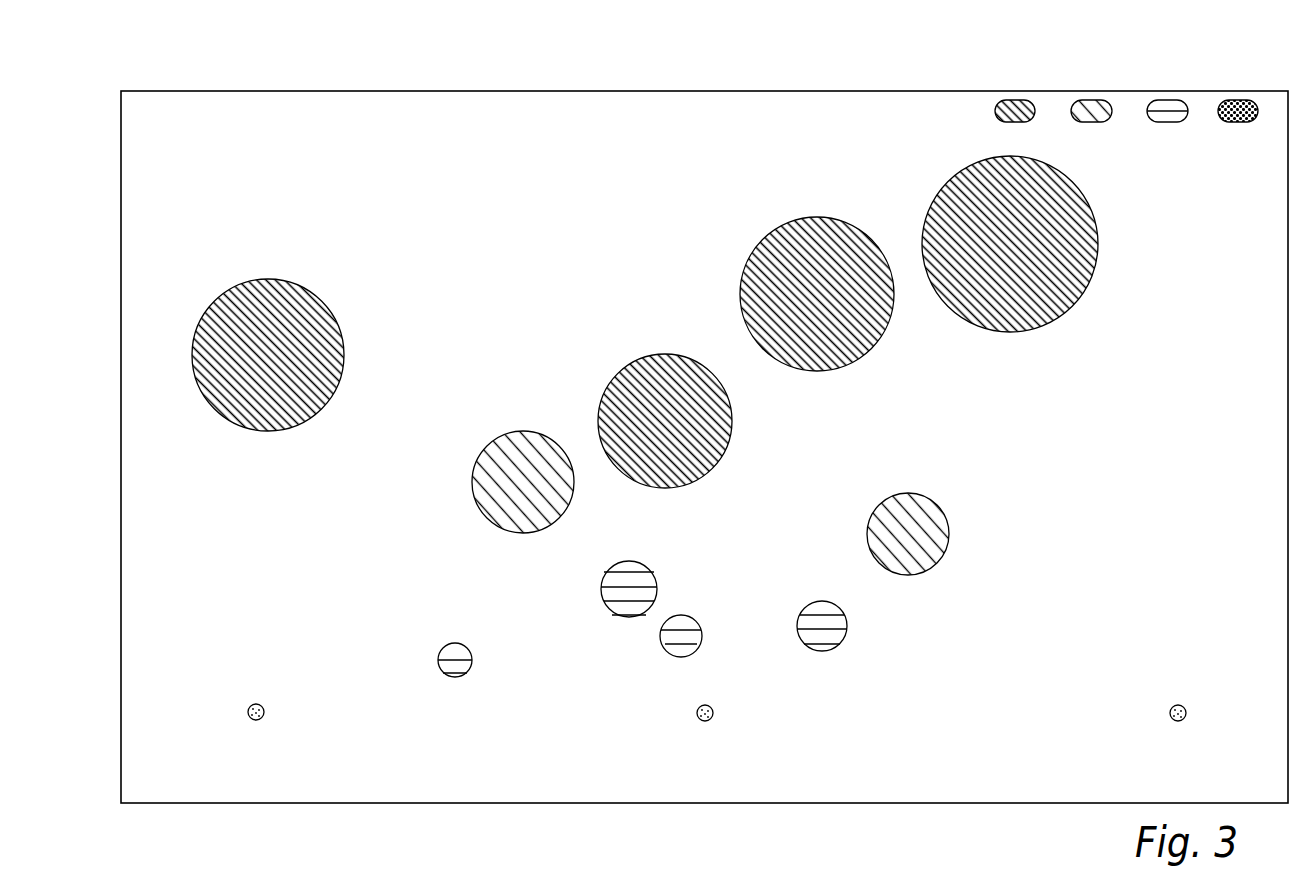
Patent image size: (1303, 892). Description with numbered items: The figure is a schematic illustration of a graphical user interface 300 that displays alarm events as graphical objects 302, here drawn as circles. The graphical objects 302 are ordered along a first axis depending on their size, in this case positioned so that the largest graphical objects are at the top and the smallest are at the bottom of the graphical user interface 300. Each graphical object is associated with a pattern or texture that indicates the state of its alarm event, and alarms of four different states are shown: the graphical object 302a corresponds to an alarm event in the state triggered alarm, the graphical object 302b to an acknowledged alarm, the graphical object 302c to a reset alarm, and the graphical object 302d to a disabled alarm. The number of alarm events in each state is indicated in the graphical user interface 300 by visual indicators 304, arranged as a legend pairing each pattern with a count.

The graphical user interface 300 is at (183, 90).
The graphical objects 302 is at (261, 279).
The graphical object 302a is at (1097, 223).
The graphical object 302b is at (948, 534).
The graphical object 302c is at (847, 626).
The graphical object 302d is at (713, 716).
The visual indicators 304 is at (1233, 98).